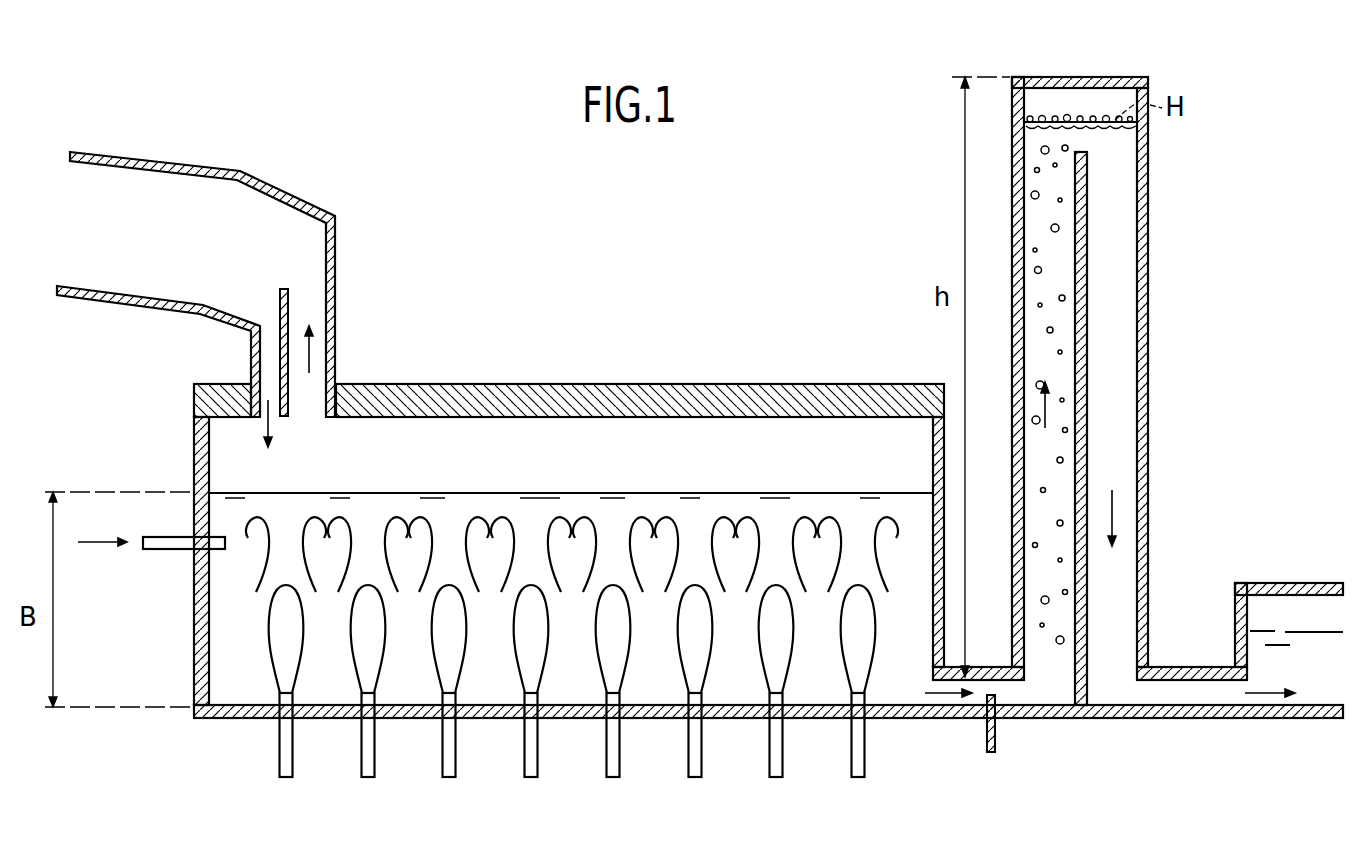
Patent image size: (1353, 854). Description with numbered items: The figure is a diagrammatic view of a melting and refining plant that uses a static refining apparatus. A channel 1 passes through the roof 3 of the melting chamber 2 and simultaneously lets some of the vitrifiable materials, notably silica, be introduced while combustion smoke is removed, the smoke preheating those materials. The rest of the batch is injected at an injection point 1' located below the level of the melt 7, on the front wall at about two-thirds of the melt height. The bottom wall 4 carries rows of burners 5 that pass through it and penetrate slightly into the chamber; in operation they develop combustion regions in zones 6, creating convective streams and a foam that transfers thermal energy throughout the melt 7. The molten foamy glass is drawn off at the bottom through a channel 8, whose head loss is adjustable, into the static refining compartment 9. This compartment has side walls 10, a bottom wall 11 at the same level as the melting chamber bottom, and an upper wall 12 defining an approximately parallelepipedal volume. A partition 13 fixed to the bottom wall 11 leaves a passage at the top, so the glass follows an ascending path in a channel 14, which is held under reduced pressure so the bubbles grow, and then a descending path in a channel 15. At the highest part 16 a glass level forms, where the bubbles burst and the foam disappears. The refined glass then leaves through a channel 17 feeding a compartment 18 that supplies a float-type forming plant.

The channel 1 is at (222, 284).
The injection point 1' is at (158, 449).
The melting chamber 2 is at (767, 548).
The roof 3 is at (470, 398).
The bottom wall 4 is at (228, 710).
The burners 5 is at (858, 763).
The zones 6 is at (277, 610).
The melt 7 is at (523, 515).
The channel 8 is at (1007, 700).
The static refining compartment 9 is at (1100, 357).
The side walls 10 is at (1150, 258).
The bottom wall 11 is at (1130, 718).
The upper wall 12 is at (1078, 77).
The partition 13 is at (1075, 275).
The channel 14 is at (1040, 572).
The channel 15 is at (1120, 400).
The highest part 16 is at (1052, 100).
The channel 17 is at (1222, 695).
The compartment 18 is at (1325, 695).